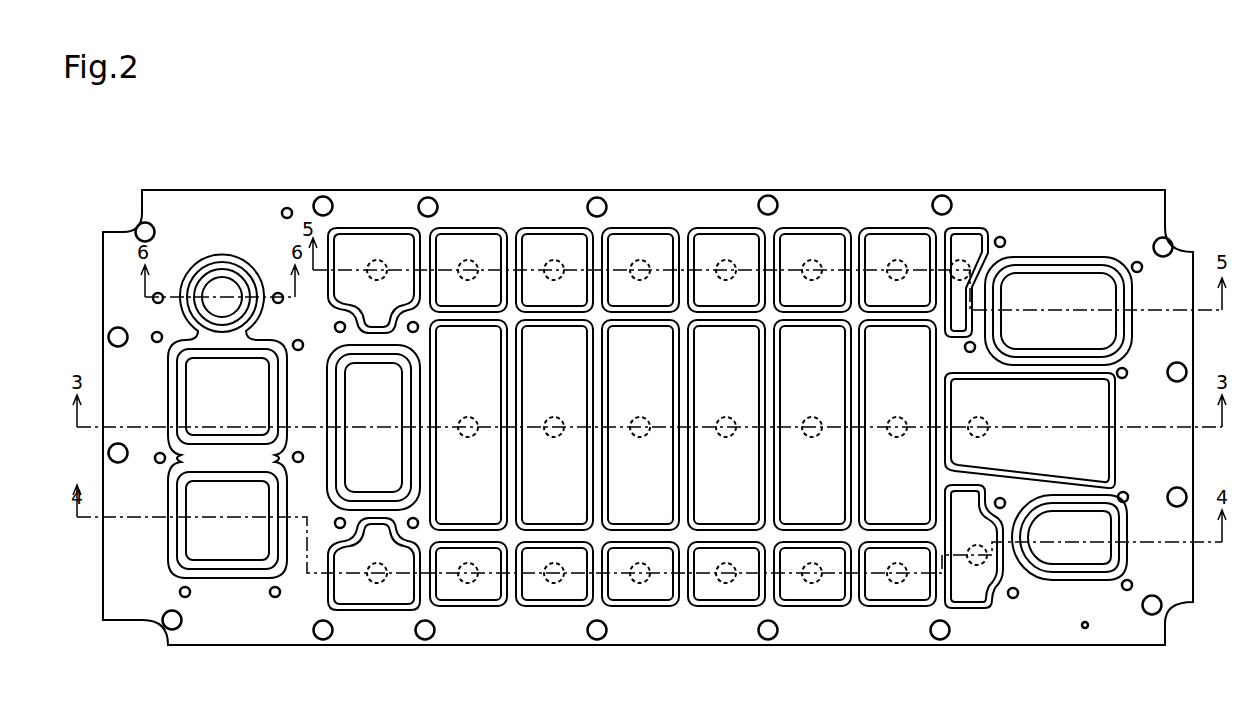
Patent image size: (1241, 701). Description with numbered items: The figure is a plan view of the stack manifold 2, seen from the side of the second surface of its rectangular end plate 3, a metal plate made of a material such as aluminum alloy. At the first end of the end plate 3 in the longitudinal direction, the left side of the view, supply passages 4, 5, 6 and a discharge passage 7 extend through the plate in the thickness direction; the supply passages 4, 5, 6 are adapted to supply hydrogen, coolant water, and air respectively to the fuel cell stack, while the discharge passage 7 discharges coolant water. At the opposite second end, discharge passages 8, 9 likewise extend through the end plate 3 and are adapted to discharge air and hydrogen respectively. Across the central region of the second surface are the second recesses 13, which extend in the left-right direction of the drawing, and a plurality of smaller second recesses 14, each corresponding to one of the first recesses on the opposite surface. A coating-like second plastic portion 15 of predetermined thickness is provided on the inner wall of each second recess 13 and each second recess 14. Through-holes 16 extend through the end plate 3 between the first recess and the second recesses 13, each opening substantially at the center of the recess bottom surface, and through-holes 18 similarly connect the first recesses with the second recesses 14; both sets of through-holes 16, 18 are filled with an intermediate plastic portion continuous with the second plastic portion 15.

The stack manifold 2 is at (986, 141).
The end plate 3 is at (688, 198).
The supply passage 4 is at (225, 284).
The supply passage 5 is at (185, 393).
The supply passage 6 is at (185, 500).
The discharge passage 7 is at (352, 393).
The discharge passage 8 is at (1055, 283).
The discharge passage 9 is at (1066, 556).
The second recess 13 is at (435, 348).
The second recess 14 is at (333, 288).
The second plastic portion 15 is at (413, 257).
The through-hole 16 is at (468, 416).
The through-hole 18 is at (368, 264).